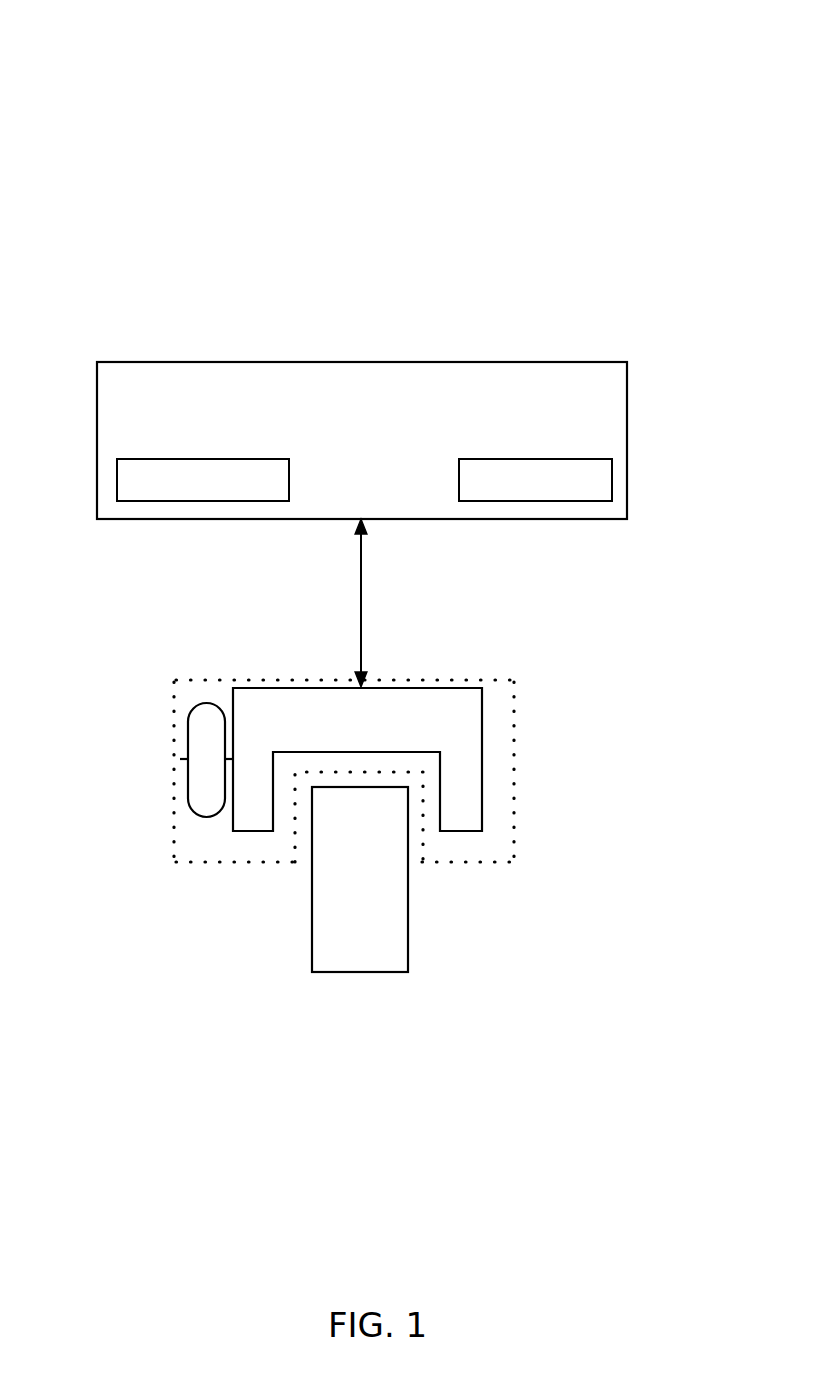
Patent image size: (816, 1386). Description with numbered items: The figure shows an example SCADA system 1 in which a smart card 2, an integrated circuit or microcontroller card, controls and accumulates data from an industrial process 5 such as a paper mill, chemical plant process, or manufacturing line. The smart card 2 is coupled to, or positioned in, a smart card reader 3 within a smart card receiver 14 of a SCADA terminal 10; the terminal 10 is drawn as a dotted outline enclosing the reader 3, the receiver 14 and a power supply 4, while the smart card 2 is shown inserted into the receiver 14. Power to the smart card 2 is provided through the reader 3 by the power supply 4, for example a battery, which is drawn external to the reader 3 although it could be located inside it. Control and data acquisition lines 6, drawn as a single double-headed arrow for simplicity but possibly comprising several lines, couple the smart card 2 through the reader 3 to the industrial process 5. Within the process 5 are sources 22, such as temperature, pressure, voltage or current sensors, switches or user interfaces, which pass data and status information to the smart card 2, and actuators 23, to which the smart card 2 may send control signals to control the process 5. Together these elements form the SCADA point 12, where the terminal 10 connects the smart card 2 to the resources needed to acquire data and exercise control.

The SCADA system 1 is at (574, 141).
The smart card 2 is at (408, 925).
The smart card reader 3 is at (483, 759).
The power supply 4 is at (180, 759).
The industrial process 5 is at (360, 404).
The control and data acquisition lines 6 is at (363, 604).
The SCADA terminal 10 is at (230, 862).
The SCADA point 12 is at (155, 1013).
The smart card receiver 14 is at (281, 812).
The sources 22 is at (540, 459).
The actuators 23 is at (197, 459).